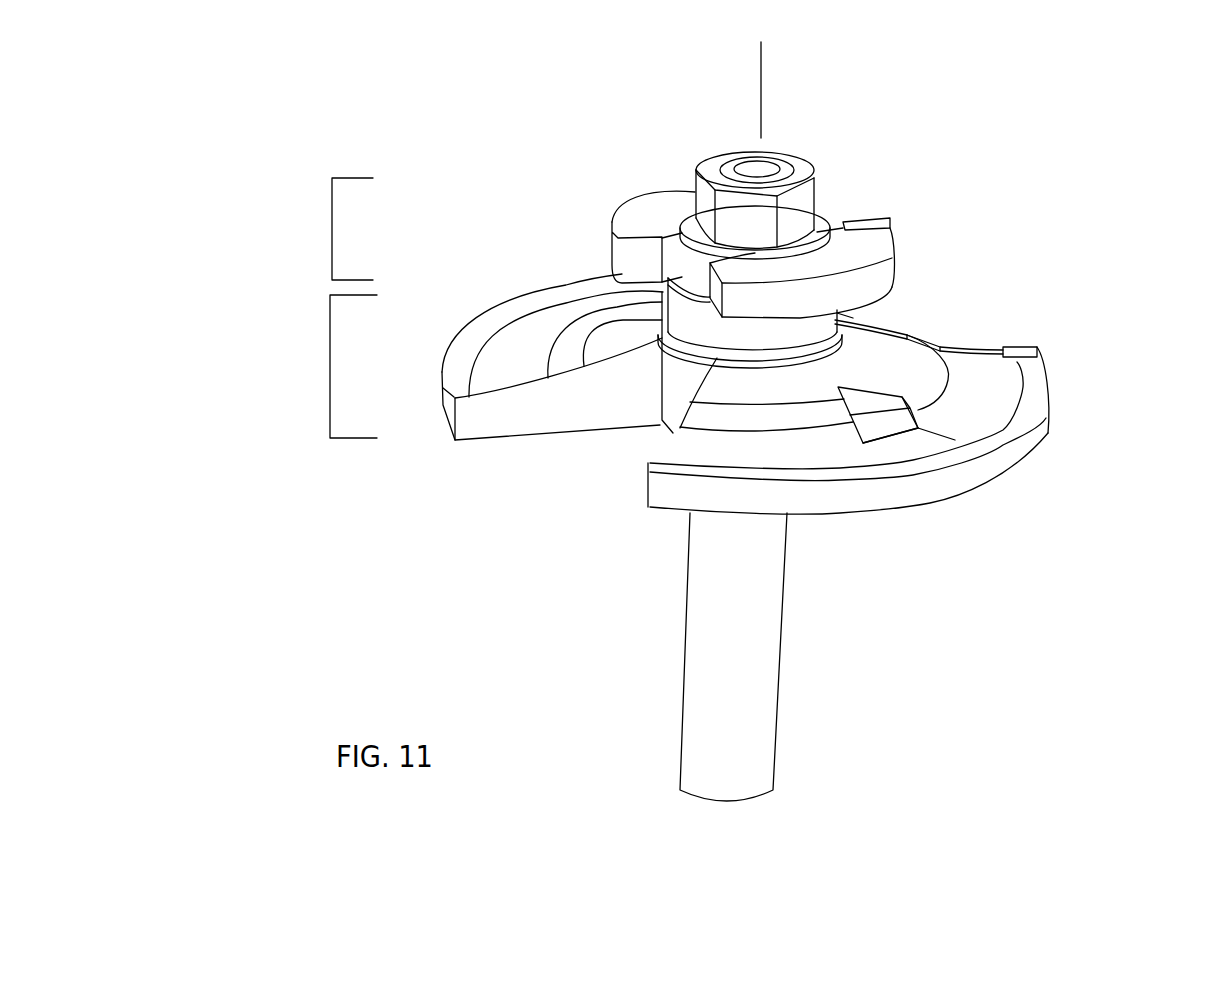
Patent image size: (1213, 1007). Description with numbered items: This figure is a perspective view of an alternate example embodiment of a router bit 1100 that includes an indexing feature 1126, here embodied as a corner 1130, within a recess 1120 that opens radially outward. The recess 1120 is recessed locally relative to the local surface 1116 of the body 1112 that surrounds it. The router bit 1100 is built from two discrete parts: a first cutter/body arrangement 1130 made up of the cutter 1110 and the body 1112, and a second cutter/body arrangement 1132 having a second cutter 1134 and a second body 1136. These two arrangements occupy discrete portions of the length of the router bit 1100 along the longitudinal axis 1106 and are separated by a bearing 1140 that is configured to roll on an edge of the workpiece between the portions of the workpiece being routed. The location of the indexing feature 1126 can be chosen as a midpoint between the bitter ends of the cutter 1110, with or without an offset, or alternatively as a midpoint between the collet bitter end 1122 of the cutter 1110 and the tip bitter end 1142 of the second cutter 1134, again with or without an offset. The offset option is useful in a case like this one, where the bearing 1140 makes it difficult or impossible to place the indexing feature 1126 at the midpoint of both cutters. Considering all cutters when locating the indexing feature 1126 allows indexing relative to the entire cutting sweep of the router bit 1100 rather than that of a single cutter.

The router bit 1100 is at (653, 147).
The longitudinal axis 1106 is at (762, 95).
The cutter 1110 is at (976, 346).
The body 1112 is at (865, 453).
The local surface 1116 is at (835, 418).
The recess 1120 is at (926, 438).
The collet bitter end 1122 is at (1054, 372).
The indexing feature 1126 is at (883, 417).
The first cutter/body arrangement 1130 is at (330, 372).
The second cutter/body arrangement 1132 is at (332, 232).
The second cutter 1134 is at (863, 219).
The second body 1136 is at (863, 250).
The bearing 1140 is at (705, 322).
The tip bitter end 1142 is at (891, 217).